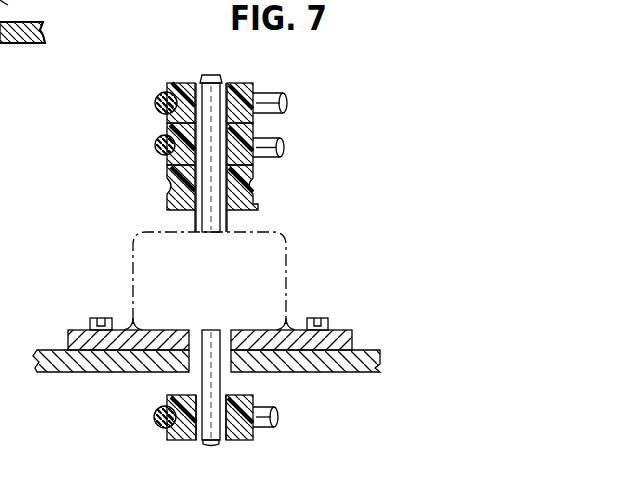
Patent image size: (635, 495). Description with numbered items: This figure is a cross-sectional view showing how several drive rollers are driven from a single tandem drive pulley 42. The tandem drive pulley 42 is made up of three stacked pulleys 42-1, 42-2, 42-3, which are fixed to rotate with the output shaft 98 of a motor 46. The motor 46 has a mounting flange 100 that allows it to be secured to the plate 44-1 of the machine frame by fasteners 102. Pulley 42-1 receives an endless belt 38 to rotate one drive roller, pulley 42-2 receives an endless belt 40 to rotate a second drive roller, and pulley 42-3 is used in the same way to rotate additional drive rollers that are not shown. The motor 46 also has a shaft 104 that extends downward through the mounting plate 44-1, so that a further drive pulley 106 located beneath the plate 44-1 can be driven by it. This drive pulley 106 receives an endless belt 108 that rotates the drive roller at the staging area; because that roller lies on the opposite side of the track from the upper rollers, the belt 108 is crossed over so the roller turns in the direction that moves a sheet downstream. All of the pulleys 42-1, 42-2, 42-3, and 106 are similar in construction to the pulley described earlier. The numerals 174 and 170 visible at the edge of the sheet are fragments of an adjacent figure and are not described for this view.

The endless belt 38 is at (287, 100).
The endless belt 40 is at (285, 147).
The tandem drive pulley 42 is at (194, 154).
The pulley 42-1 is at (167, 83).
The pulley 42-2 is at (254, 166).
The pulley 42-3 is at (253, 205).
The plate 44-1 is at (360, 350).
The motor 46 is at (133, 262).
The output shaft 98 is at (200, 227).
The mounting flange 100 is at (68, 340).
The fasteners 102 is at (99, 318).
The shaft 104 is at (202, 383).
The drive pulley 106 is at (236, 440).
The endless belt 108 is at (278, 417).
The adjacent figure element 174 is at (17, 461).
The adjacent figure element 170 is at (14, 491).